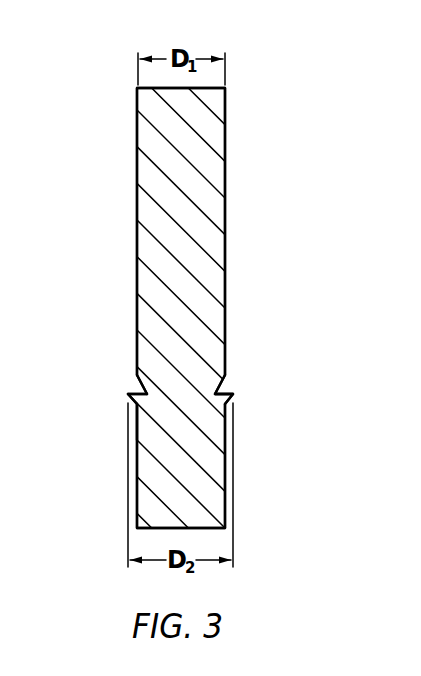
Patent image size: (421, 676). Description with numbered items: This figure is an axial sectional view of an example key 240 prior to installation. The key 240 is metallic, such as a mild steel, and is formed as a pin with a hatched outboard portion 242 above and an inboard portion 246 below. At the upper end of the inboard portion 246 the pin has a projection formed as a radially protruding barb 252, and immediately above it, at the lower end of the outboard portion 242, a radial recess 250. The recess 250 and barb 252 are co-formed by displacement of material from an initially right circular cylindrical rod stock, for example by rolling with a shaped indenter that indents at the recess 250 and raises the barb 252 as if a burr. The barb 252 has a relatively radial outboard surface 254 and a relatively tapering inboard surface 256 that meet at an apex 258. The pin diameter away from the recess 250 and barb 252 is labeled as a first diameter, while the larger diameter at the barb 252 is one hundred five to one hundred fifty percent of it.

The key 240 is at (240, 88).
The outboard portion 242 is at (200, 197).
The inboard portion 246 is at (197, 478).
The radial recess 250 is at (234, 379).
The barb 252 is at (240, 392).
The outboard surface 254 is at (137, 393).
The inboard surface 256 is at (128, 405).
The apex 258 is at (133, 395).